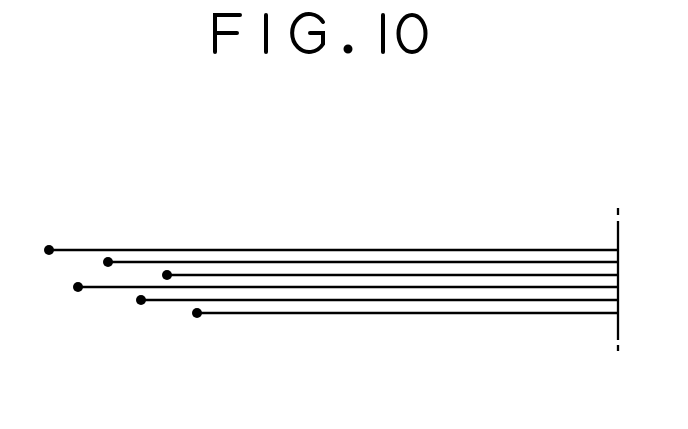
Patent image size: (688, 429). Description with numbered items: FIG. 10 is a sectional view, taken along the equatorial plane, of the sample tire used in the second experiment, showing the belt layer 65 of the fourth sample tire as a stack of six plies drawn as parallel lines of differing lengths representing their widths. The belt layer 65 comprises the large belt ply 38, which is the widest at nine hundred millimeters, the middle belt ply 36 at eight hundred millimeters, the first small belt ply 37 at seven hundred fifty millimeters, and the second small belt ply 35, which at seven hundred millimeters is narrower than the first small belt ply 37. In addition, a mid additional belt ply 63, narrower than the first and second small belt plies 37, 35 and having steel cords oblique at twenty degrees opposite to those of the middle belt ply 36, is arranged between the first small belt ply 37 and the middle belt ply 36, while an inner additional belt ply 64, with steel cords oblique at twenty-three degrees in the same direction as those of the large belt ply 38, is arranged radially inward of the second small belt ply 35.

The second small belt ply 35 is at (303, 302).
The middle belt ply 36 is at (392, 289).
The first small belt ply 37 is at (292, 260).
The large belt ply 38 is at (200, 247).
The mid additional belt ply 63 is at (500, 273).
The inner additional belt ply 64 is at (492, 315).
The belt layer 65 is at (376, 242).